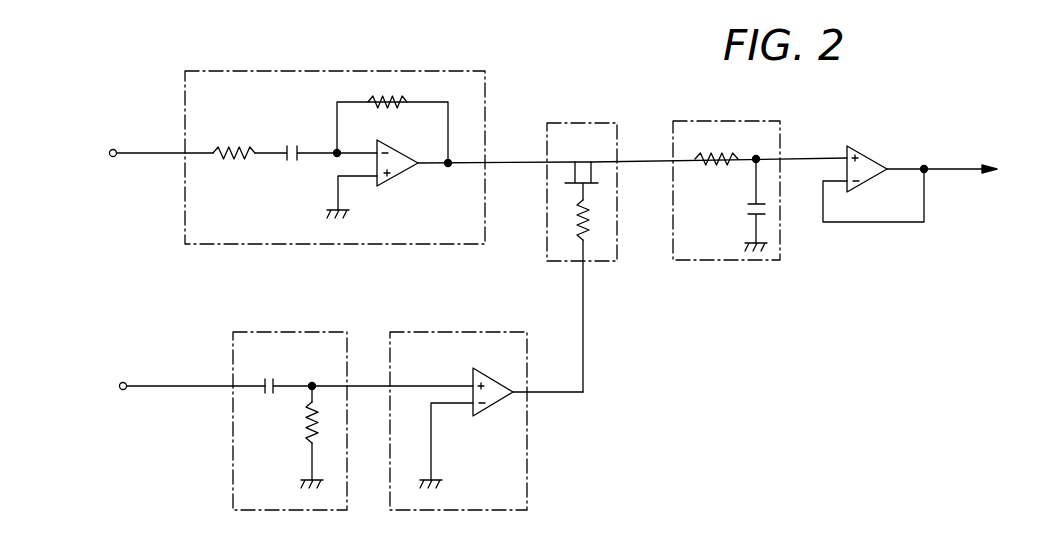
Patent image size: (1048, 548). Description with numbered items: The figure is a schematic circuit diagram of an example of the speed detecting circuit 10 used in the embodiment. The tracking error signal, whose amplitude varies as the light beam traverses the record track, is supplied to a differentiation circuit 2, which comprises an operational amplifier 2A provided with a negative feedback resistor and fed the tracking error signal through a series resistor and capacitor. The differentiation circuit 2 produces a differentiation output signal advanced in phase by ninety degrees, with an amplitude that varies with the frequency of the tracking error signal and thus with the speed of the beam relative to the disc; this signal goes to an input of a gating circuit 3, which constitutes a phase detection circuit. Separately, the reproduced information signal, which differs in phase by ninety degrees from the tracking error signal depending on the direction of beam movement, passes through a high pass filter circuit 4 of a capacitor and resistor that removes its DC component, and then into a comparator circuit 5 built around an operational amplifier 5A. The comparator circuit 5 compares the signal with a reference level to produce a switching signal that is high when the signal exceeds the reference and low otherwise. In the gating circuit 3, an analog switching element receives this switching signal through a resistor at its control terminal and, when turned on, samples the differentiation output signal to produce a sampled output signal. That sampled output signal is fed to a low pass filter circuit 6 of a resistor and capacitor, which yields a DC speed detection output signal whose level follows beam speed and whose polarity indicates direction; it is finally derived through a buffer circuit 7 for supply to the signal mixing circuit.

The differentiation circuit 2 is at (206, 71).
The operational amplifier 2A is at (405, 173).
The gating circuit 3 is at (557, 123).
The high pass filter circuit 4 is at (243, 332).
The comparator circuit 5 is at (400, 332).
The operational amplifier 5A is at (490, 411).
The low pass filter circuit 6 is at (688, 121).
The buffer circuit 7 is at (870, 156).
The speed detecting circuit 10 is at (646, 92).